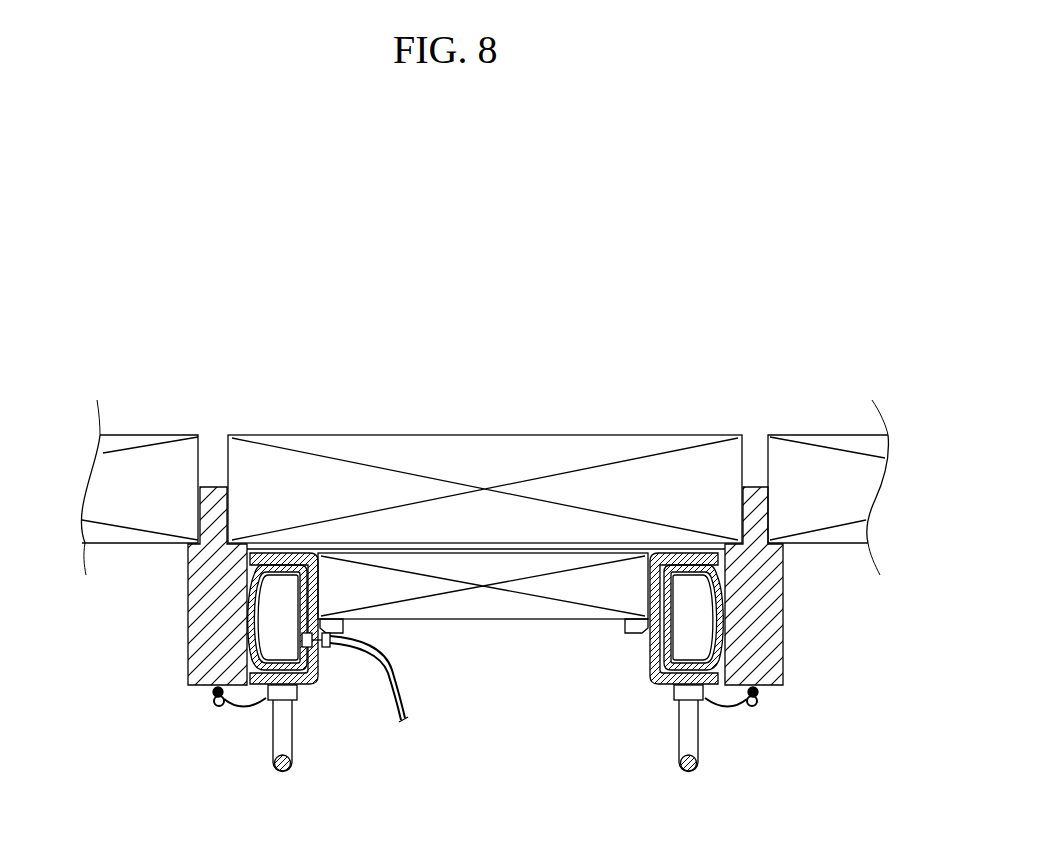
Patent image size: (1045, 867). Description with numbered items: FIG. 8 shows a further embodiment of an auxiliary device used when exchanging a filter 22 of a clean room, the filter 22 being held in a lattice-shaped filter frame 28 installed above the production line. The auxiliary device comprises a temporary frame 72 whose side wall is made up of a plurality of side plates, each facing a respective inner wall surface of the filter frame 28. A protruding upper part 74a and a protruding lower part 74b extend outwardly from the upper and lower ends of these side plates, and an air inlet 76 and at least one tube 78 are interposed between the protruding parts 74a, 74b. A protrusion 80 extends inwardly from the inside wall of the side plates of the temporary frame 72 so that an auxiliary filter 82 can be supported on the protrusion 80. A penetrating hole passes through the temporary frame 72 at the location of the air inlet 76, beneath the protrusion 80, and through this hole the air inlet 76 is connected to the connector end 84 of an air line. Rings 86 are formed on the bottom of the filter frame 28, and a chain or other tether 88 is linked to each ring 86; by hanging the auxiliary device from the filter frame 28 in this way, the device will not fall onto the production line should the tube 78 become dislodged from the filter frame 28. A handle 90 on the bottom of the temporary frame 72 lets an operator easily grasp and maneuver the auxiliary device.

The filter 22 is at (392, 434).
The filter frame 28 is at (783, 615).
The temporary frame 72 is at (316, 687).
The protruding upper part 74a is at (459, 589).
The protruding lower part 74b is at (650, 645).
The air inlet 76 is at (262, 633).
The tube 78 is at (258, 597).
The protrusion 80 is at (345, 631).
The auxiliary filter 82 is at (553, 552).
The connector end 84 is at (403, 722).
The ring 86 is at (213, 692).
The tether 88 is at (266, 700).
The handle 90 is at (680, 757).